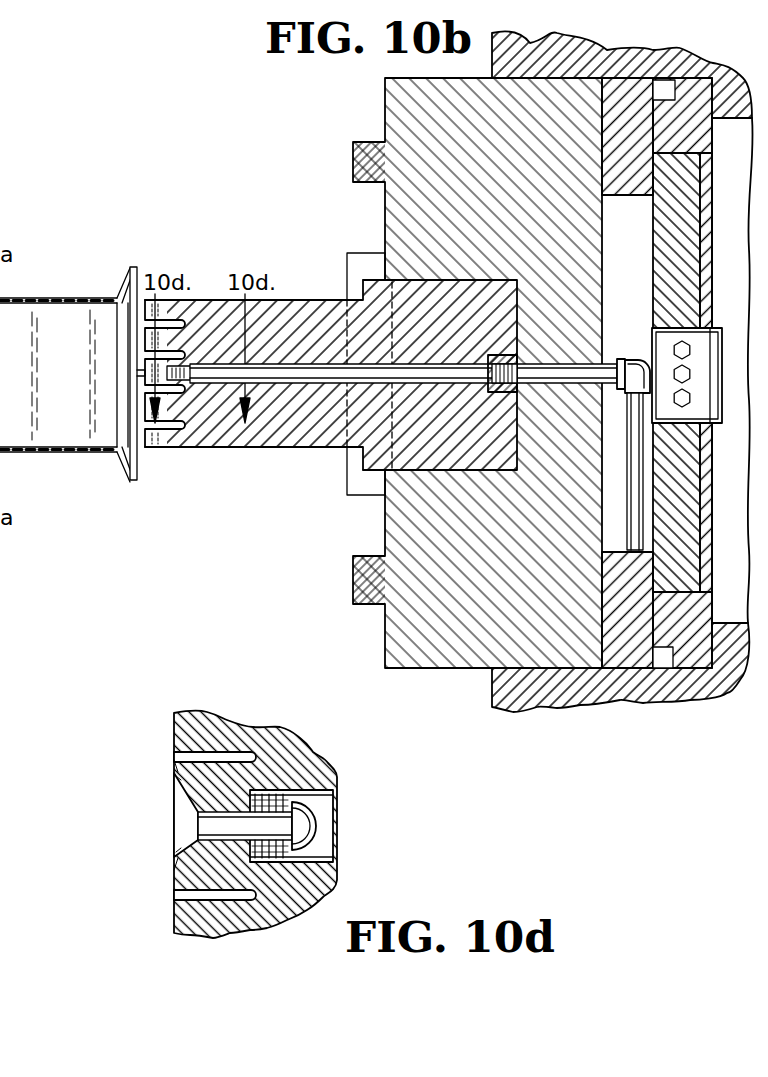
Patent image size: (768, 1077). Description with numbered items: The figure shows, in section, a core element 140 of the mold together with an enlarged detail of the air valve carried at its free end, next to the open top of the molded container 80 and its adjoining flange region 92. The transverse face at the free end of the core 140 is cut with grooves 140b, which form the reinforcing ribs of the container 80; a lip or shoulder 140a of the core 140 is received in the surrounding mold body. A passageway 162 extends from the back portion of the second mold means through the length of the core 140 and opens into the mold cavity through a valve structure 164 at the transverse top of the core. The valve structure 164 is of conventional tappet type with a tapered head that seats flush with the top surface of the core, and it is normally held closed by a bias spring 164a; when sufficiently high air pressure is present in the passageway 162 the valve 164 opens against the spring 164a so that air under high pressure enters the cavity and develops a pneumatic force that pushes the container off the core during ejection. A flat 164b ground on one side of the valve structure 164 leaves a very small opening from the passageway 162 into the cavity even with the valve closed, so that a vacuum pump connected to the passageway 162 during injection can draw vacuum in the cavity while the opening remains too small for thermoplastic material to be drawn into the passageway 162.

In FIG. 10b, the container 80 is at (60, 455).
In FIG. 10b, the flange plate 92 is at (134, 476).
In FIG. 10b, the core 140 is at (292, 450).
In FIG. 10b, the retaining lip 140a is at (363, 288).
In FIG. 10b, the grooves 140b is at (200, 343).
In FIG. 10d, the grooves 140b is at (192, 758).
In FIG. 10b, the passageway 162 is at (440, 375).
In FIG. 10d, the passageway 162 is at (327, 851).
In FIG. 10b, the valve structure 164 is at (215, 380).
In FIG. 10d, the valve structure 164 is at (220, 820).
In FIG. 10d, the bias spring 164a is at (265, 797).
In FIG. 10d, the flat 164b is at (175, 836).